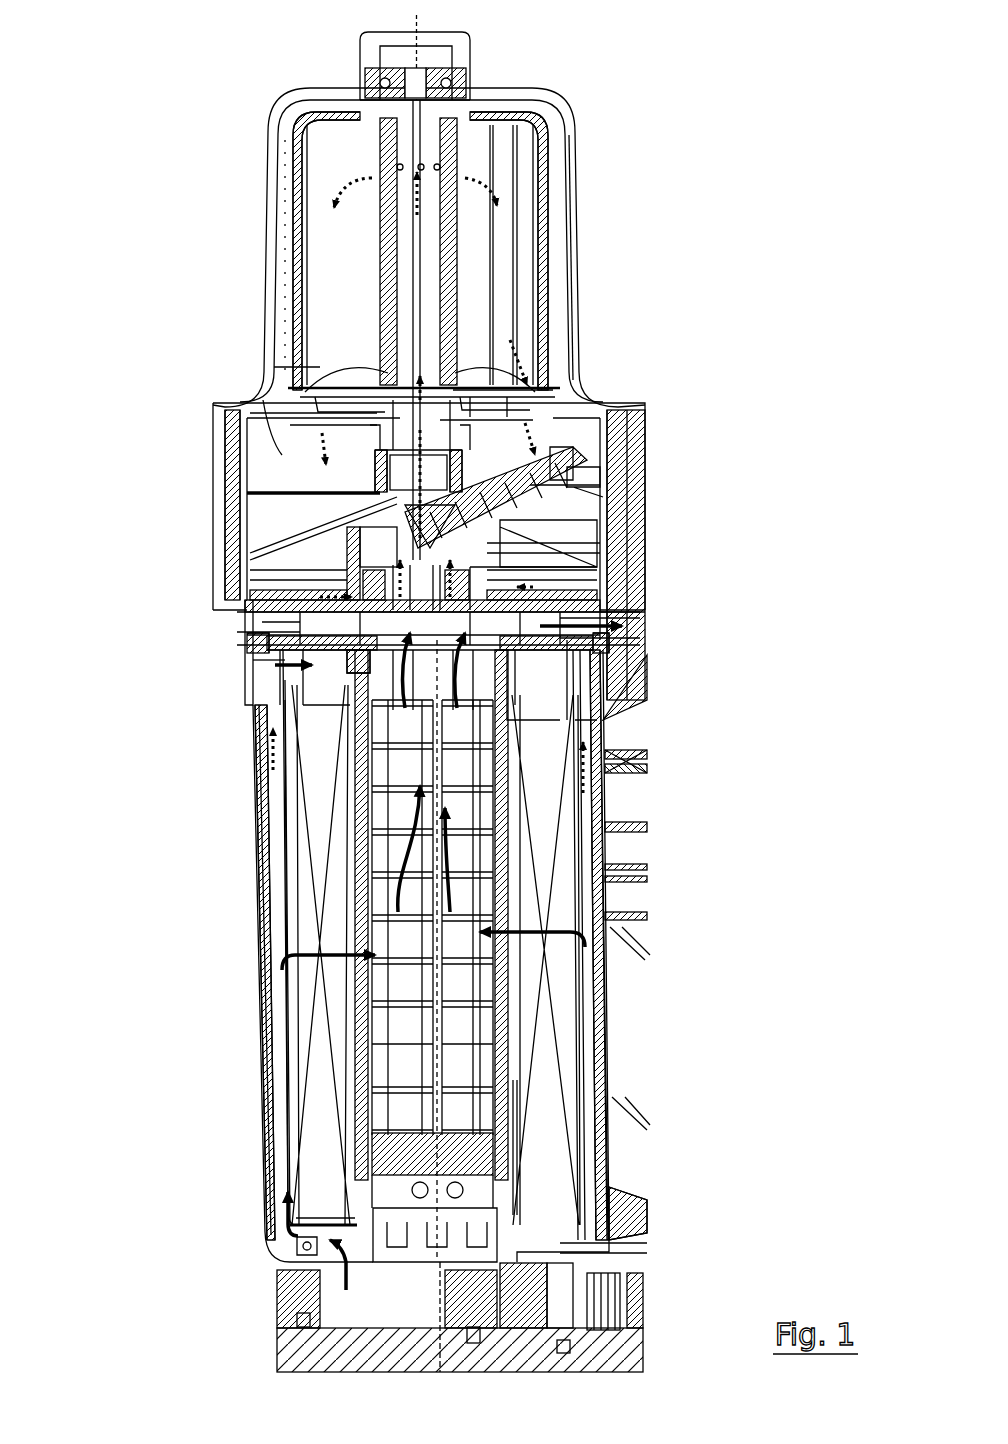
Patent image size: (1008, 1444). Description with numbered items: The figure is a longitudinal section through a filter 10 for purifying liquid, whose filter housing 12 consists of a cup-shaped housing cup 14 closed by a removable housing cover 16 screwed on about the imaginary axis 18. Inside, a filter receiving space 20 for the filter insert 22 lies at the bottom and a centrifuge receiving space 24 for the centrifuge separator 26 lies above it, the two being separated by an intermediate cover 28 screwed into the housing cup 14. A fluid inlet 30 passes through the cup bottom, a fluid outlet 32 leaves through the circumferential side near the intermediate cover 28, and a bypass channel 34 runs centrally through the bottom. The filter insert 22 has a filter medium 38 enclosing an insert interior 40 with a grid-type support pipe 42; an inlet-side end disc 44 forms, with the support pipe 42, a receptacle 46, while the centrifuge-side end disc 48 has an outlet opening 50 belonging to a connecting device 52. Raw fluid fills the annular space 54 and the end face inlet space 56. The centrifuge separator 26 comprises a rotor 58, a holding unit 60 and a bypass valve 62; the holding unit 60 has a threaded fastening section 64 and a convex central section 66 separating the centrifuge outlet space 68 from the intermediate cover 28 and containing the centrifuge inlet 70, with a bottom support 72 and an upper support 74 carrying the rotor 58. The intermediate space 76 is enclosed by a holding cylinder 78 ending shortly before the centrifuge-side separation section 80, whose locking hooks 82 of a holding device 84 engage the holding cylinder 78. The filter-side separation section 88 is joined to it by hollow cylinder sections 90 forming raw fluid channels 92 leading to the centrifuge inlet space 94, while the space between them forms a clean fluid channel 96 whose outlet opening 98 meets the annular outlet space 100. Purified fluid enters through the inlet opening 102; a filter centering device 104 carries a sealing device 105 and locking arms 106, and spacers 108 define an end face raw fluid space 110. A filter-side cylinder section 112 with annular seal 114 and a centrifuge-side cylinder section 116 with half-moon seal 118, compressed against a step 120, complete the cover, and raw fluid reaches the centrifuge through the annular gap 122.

The filter 10 is at (93, 92).
The filter housing 12 is at (283, 117).
The housing cup 14 is at (269, 1163).
The housing cover 16 is at (274, 160).
The axis 18 is at (415, 30).
The filter receiving space 20 is at (274, 1110).
The filter insert 22 is at (289, 1050).
The centrifuge receiving space 24 is at (288, 222).
The centrifuge separator 26 is at (292, 196).
The intermediate cover 28 is at (258, 622).
The fluid inlet 30 is at (332, 1265).
The fluid outlet 32 is at (640, 653).
The bypass channel 34 is at (400, 1250).
The filter medium 38 is at (309, 1180).
The insert interior 40 is at (432, 917).
The support pipe 42 is at (517, 1093).
The inlet-side end disc 44 is at (480, 1187).
The receptacle 46 is at (505, 1163).
The centrifuge-side end disc 48 is at (640, 668).
The outlet opening 50 is at (628, 913).
The connecting device 52 is at (255, 692).
The annular space 54 is at (276, 1003).
The inlet space 56 is at (282, 1241).
The rotor 58 is at (504, 174).
The holding unit 60 is at (298, 532).
The bypass valve 62 is at (568, 462).
The fastening section 64 is at (250, 497).
The central section 66 is at (242, 433).
The centrifuge outlet space 68 is at (278, 450).
The centrifuge inlet 70 is at (480, 470).
The bottom support 72 is at (440, 440).
The upper support 74 is at (468, 84).
The intermediate space 76 is at (640, 515).
The holding cylinder 78 is at (640, 547).
The centrifuge-side separation section 80 is at (242, 600).
The locking hooks 82 is at (640, 569).
The holding device 84 is at (640, 607).
The filter-side separation section 88 is at (255, 674).
The hollow cylinder sections 90 is at (640, 635).
The raw fluid channel 92 is at (640, 643).
The centrifuge inlet space 94 is at (242, 540).
The clean fluid channel 96 is at (250, 633).
The outlet opening 98 is at (250, 667).
The annular outlet space 100 is at (640, 621).
The inlet opening 102 is at (340, 667).
The filter centering device 104 is at (352, 667).
The sealing device 105 is at (270, 757).
The locking arms 106 is at (360, 672).
The spacers 108 is at (548, 780).
The raw fluid space 110 is at (548, 738).
The filter-side cylinder section 112 is at (640, 680).
The annular seal 114 is at (640, 712).
The centrifuge-side cylinder section 116 is at (640, 597).
The half-moon seal 118 is at (640, 585).
The step 120 is at (242, 562).
The annular gap 122 is at (640, 800).